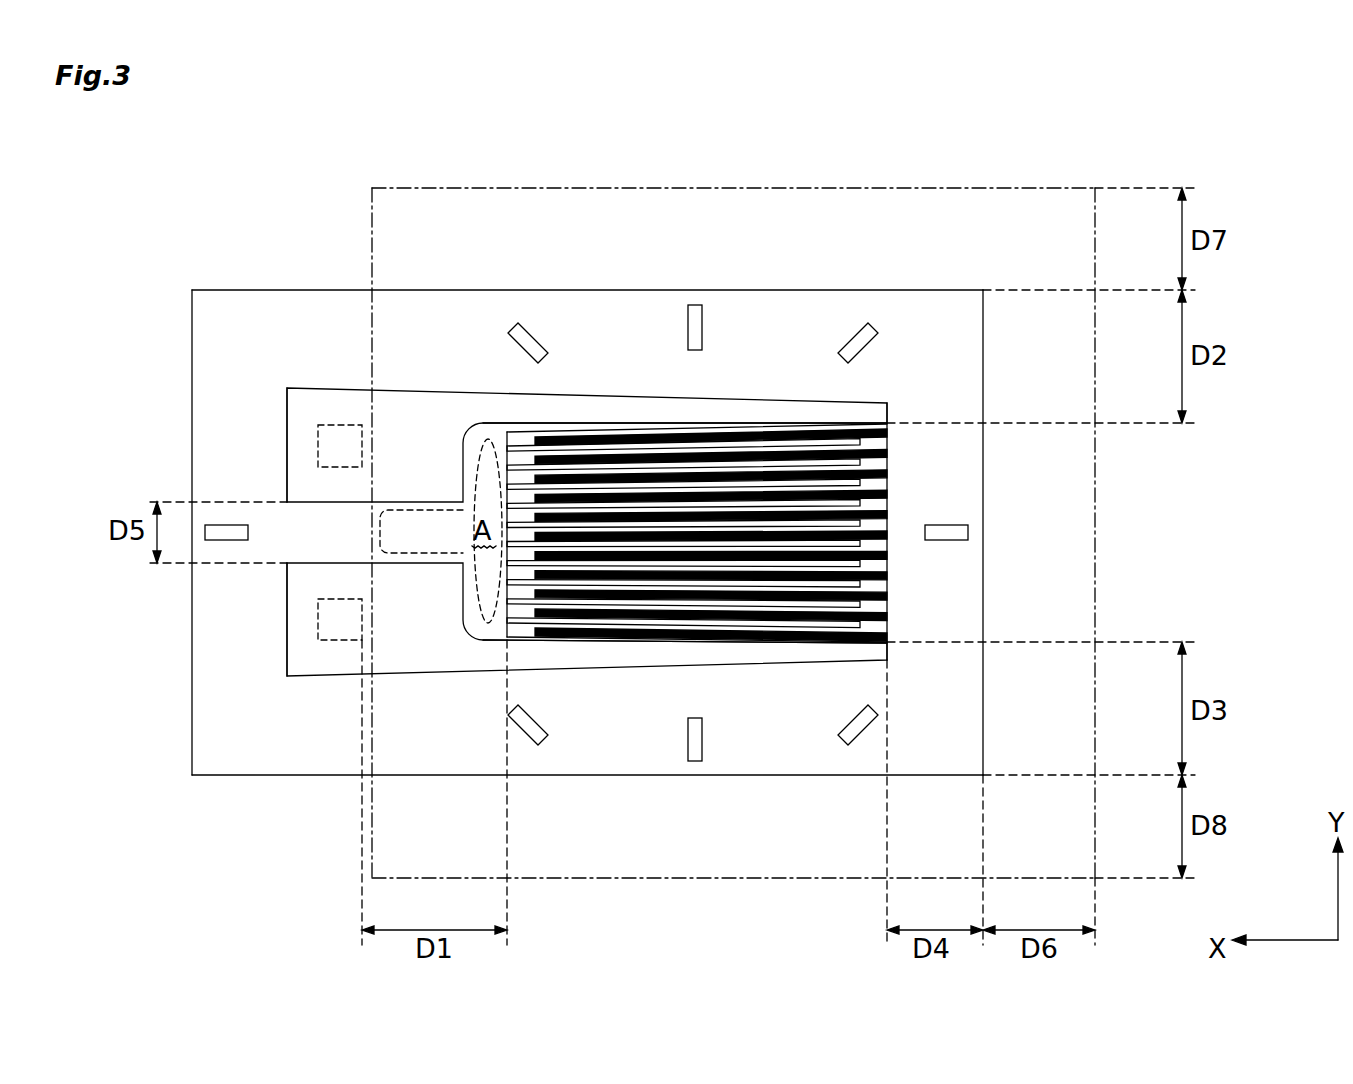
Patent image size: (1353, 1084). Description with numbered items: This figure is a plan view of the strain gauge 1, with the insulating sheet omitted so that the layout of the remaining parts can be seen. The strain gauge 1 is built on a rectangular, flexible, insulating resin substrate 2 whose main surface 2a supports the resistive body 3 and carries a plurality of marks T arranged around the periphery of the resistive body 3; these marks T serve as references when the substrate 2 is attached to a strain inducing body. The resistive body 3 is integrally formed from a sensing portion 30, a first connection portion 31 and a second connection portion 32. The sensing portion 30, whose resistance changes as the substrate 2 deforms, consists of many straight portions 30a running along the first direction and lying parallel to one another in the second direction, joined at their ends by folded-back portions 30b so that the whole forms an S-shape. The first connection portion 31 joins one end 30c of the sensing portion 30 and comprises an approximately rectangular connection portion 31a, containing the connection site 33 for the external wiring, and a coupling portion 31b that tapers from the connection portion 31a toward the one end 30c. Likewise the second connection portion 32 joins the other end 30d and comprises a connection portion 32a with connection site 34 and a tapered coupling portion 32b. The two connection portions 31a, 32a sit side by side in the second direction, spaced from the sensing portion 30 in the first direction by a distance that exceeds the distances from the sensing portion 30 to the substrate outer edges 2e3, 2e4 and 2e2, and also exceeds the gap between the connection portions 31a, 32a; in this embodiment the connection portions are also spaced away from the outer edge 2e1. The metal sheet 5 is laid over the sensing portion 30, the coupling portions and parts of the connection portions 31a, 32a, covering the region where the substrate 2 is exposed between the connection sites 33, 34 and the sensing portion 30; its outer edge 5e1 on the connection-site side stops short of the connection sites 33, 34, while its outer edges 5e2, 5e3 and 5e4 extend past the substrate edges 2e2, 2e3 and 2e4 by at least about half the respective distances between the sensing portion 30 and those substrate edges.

The strain gauge 1 is at (1252, 146).
The substrate 2 is at (632, 544).
The main surface 2a is at (214, 758).
The outer edge 2e1 is at (190, 720).
The outer edge 2e2 is at (986, 455).
The outer edge 2e3 is at (784, 288).
The outer edge 2e4 is at (816, 777).
The resistive body 3 is at (644, 527).
The metal sheet 5 is at (738, 534).
The outer edge 5e1 is at (368, 842).
The outer edge 5e2 is at (1097, 606).
The outer edge 5e3 is at (940, 187).
The outer edge 5e4 is at (535, 880).
The sensing portion 30 is at (843, 527).
The straight portion 30a is at (666, 624).
The folded-back portion 30b is at (890, 606).
The one end 30c is at (880, 422).
The other end 30d is at (880, 648).
The first connection portion 31 is at (497, 312).
The connection portion 31a is at (300, 410).
The coupling portion 31b is at (600, 415).
The second connection portion 32 is at (497, 748).
The connection portion 32a is at (300, 655).
The coupling portion 32b is at (616, 652).
The connection site 33 is at (340, 424).
The connection site 34 is at (320, 616).
The mark T is at (694, 303).